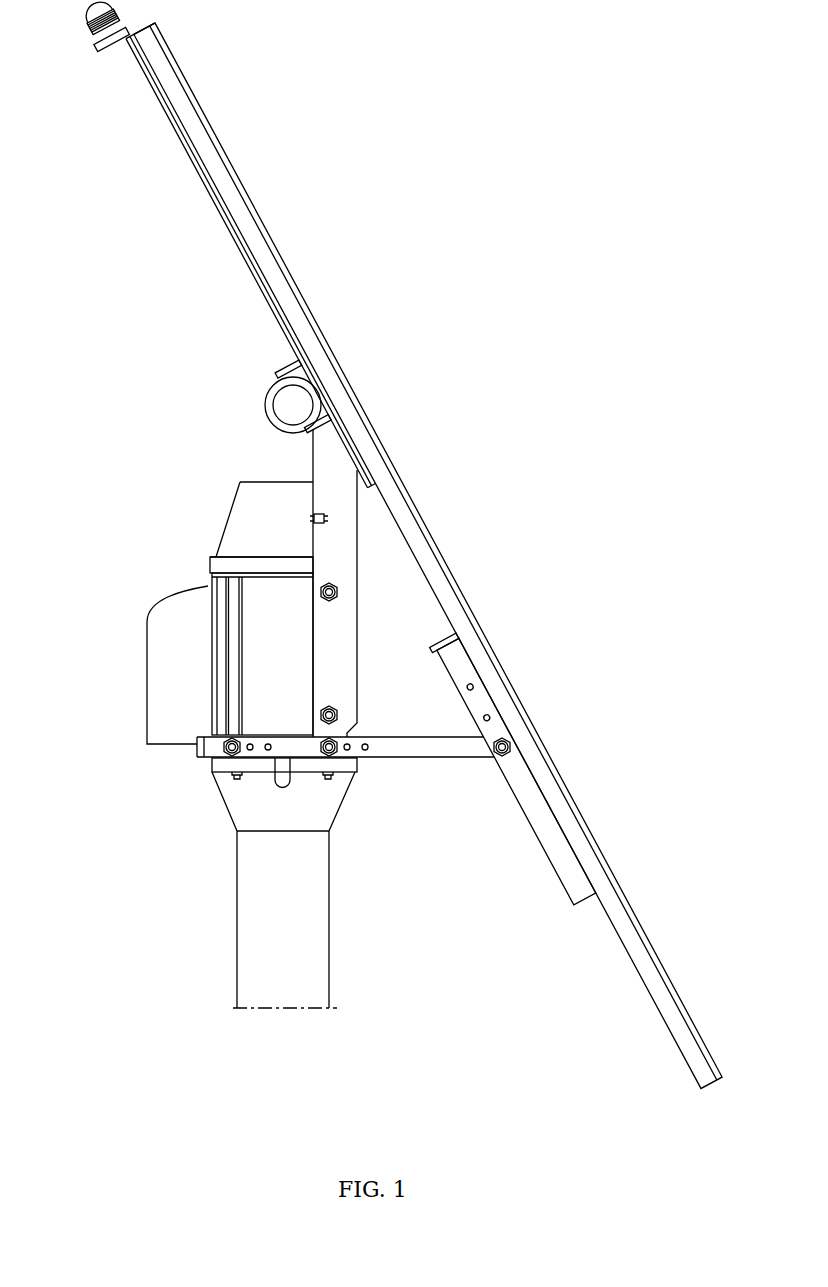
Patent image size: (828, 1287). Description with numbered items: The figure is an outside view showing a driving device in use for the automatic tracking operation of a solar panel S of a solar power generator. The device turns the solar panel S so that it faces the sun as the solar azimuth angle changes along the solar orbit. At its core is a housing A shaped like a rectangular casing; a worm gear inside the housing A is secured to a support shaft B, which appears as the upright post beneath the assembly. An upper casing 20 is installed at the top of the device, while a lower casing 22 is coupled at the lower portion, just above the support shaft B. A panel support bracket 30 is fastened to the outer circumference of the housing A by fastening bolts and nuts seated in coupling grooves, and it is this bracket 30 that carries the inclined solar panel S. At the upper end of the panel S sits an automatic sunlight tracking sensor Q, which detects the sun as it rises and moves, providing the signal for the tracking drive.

The automatic sunlight tracking sensor Q is at (91, 32).
The solar panel S is at (288, 264).
The upper casing 20 is at (260, 514).
The housing A is at (253, 607).
The lower casing 22 is at (242, 793).
The support shaft B is at (250, 890).
The panel support bracket 30 is at (408, 748).